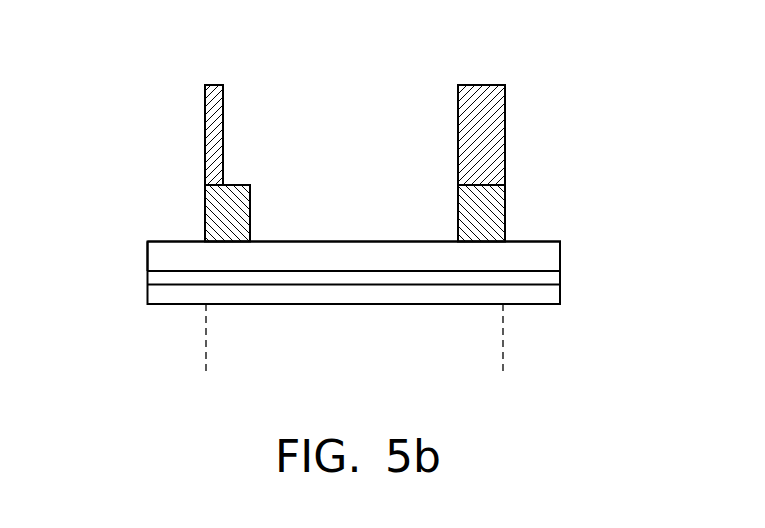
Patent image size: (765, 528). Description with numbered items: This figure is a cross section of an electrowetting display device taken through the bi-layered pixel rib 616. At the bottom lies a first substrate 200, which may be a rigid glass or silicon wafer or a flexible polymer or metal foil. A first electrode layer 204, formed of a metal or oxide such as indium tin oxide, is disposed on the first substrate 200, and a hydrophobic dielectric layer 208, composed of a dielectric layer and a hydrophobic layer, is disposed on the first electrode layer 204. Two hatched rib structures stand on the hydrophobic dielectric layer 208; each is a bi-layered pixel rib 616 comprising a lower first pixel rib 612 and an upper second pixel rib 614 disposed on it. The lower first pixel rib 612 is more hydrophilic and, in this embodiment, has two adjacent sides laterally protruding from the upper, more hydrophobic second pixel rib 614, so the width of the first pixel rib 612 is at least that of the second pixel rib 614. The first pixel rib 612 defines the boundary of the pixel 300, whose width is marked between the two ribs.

The first substrate 200 is at (148, 295).
The first electrode layer 204 is at (148, 278).
The hydrophobic dielectric layer 208 is at (148, 258).
The pixel 300 is at (503, 358).
The first pixel rib 612 is at (213, 208).
The second pixel rib 614 is at (212, 158).
The bi-layered pixel rib 616 is at (115, 140).